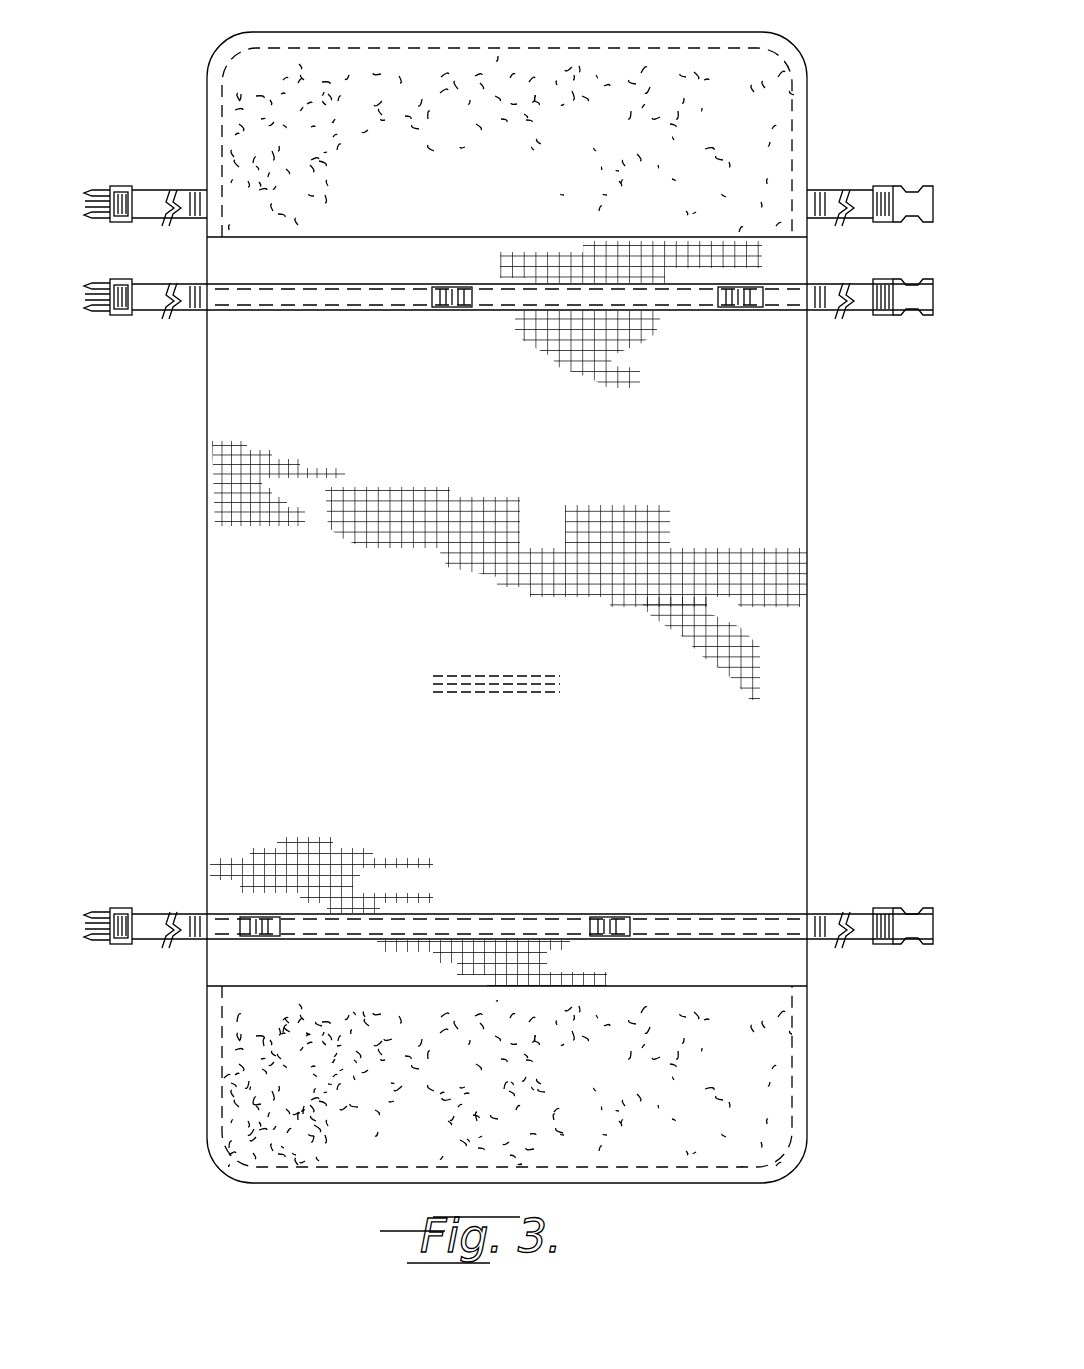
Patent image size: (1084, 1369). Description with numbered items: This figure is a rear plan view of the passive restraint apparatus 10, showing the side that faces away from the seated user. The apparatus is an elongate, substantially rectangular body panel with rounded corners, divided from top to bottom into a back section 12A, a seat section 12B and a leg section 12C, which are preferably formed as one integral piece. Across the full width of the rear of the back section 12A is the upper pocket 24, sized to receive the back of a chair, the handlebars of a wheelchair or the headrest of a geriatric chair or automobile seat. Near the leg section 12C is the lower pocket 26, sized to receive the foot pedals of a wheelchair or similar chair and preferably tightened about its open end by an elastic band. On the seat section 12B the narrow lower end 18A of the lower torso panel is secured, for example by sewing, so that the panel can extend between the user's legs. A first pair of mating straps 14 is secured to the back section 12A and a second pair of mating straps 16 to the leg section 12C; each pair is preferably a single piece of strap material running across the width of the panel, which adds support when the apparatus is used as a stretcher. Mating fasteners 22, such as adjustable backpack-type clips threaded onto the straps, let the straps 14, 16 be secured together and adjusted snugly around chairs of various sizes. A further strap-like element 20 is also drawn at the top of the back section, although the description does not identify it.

The restraint apparatus 10 is at (190, 64).
The back section 12A is at (280, 323).
The seat section 12B is at (225, 622).
The leg section 12C is at (235, 987).
The first pair of mating straps 14 is at (195, 312).
The second pair of mating straps 16 is at (158, 943).
The lower end of lower torso panel 18A is at (512, 698).
The top strap 20 is at (158, 193).
The mating fasteners 22 is at (118, 222).
The upper pocket 24 is at (332, 195).
The lower pocket 26 is at (315, 1010).